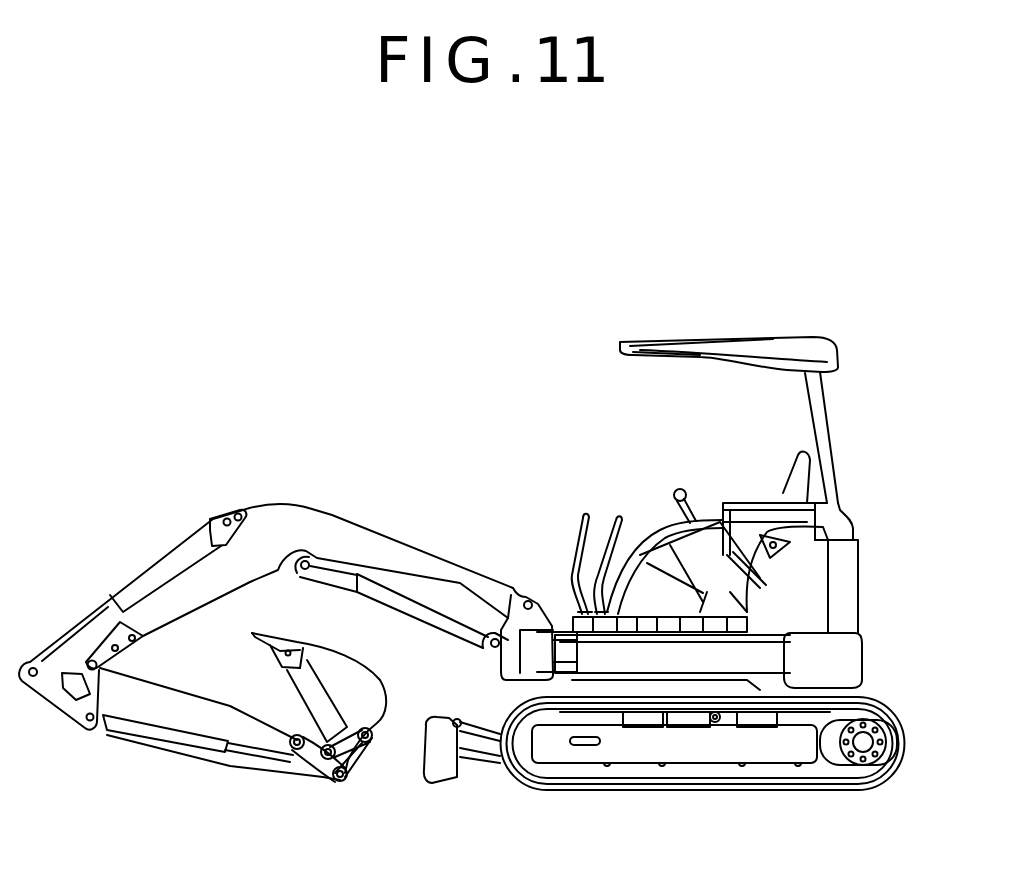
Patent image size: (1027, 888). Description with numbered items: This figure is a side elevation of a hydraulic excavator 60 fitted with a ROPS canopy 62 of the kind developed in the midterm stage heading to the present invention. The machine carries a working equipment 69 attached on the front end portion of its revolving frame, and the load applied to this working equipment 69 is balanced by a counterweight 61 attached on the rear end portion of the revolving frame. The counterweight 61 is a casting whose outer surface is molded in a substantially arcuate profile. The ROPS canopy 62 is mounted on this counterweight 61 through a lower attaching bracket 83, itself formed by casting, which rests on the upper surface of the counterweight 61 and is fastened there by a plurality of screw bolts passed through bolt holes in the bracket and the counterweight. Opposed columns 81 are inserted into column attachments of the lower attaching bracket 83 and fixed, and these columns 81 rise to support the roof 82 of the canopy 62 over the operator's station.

The hydraulic excavator 60 is at (499, 410).
The counterweight 61 is at (865, 593).
The ROPS canopy 62 is at (836, 408).
The working equipment 69 is at (352, 513).
The columns 81 is at (836, 471).
The roof 82 is at (765, 336).
The lower attaching bracket 83 is at (852, 517).